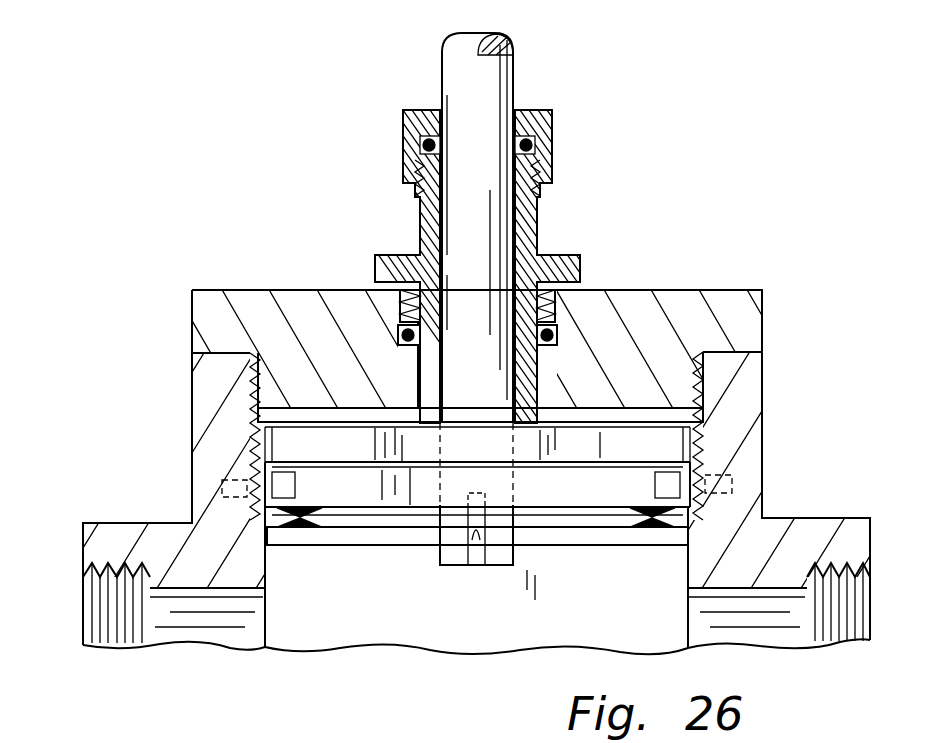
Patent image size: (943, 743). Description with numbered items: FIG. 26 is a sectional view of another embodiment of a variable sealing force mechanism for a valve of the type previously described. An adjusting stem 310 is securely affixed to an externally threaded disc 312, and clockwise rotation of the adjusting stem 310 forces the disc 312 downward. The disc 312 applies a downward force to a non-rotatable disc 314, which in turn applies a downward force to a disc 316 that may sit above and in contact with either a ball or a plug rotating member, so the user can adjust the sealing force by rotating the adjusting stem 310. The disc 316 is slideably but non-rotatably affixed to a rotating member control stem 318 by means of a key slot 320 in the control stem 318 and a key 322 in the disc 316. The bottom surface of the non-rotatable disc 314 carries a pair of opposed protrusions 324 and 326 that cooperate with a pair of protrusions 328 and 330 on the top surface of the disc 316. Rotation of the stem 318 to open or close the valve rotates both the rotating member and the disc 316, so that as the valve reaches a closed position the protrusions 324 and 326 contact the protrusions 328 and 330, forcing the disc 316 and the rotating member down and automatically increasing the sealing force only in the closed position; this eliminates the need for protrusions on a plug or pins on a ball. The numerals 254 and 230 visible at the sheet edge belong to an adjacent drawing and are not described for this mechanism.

The adjusting stem 310 is at (527, 225).
The externally threaded disc 312 is at (628, 443).
The non-rotatable disc 314 is at (303, 468).
The disc 316 is at (346, 545).
The rotating member control stem 318 is at (472, 97).
The key slot 320 is at (478, 567).
The key 322 is at (480, 567).
The protrusion 324 is at (290, 505).
The protrusion 326 is at (700, 478).
The protrusion 328 is at (294, 528).
The protrusion 330 is at (663, 548).
The adjacent figure element 254 is at (250, 742).
The adjacent figure element 230 is at (73, 736).